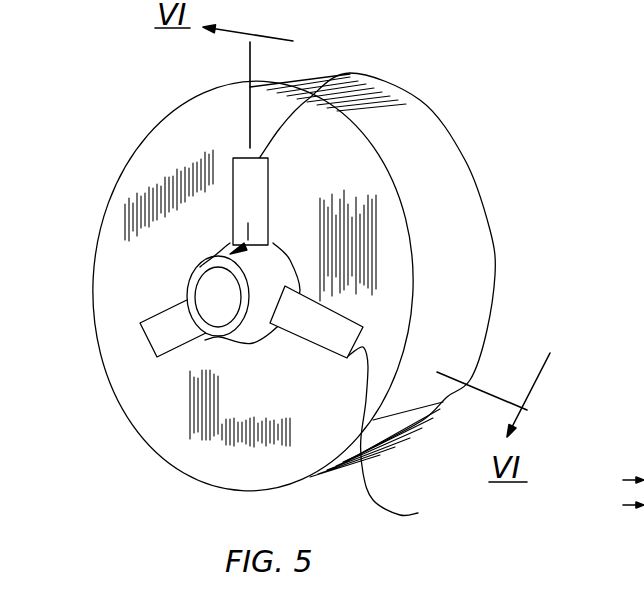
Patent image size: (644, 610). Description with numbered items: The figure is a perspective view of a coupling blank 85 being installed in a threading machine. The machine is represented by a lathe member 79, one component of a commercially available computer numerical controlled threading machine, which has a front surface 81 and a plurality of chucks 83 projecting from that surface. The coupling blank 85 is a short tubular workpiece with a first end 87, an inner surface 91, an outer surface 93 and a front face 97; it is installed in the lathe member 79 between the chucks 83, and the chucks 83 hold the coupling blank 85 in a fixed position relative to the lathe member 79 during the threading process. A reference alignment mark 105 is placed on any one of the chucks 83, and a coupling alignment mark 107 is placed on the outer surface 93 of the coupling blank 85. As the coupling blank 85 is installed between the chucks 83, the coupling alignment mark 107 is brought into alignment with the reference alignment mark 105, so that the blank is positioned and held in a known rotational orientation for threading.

The lathe member 79 is at (495, 277).
The front surface 81 is at (177, 157).
The chucks 83 is at (352, 73).
The coupling blank 85 is at (190, 293).
The first end 87 is at (192, 267).
The inner surface 91 is at (212, 312).
The outer surface 93 is at (263, 260).
The front face 97 is at (188, 304).
The reference alignment mark 105 is at (270, 233).
The coupling alignment mark 107 is at (235, 240).